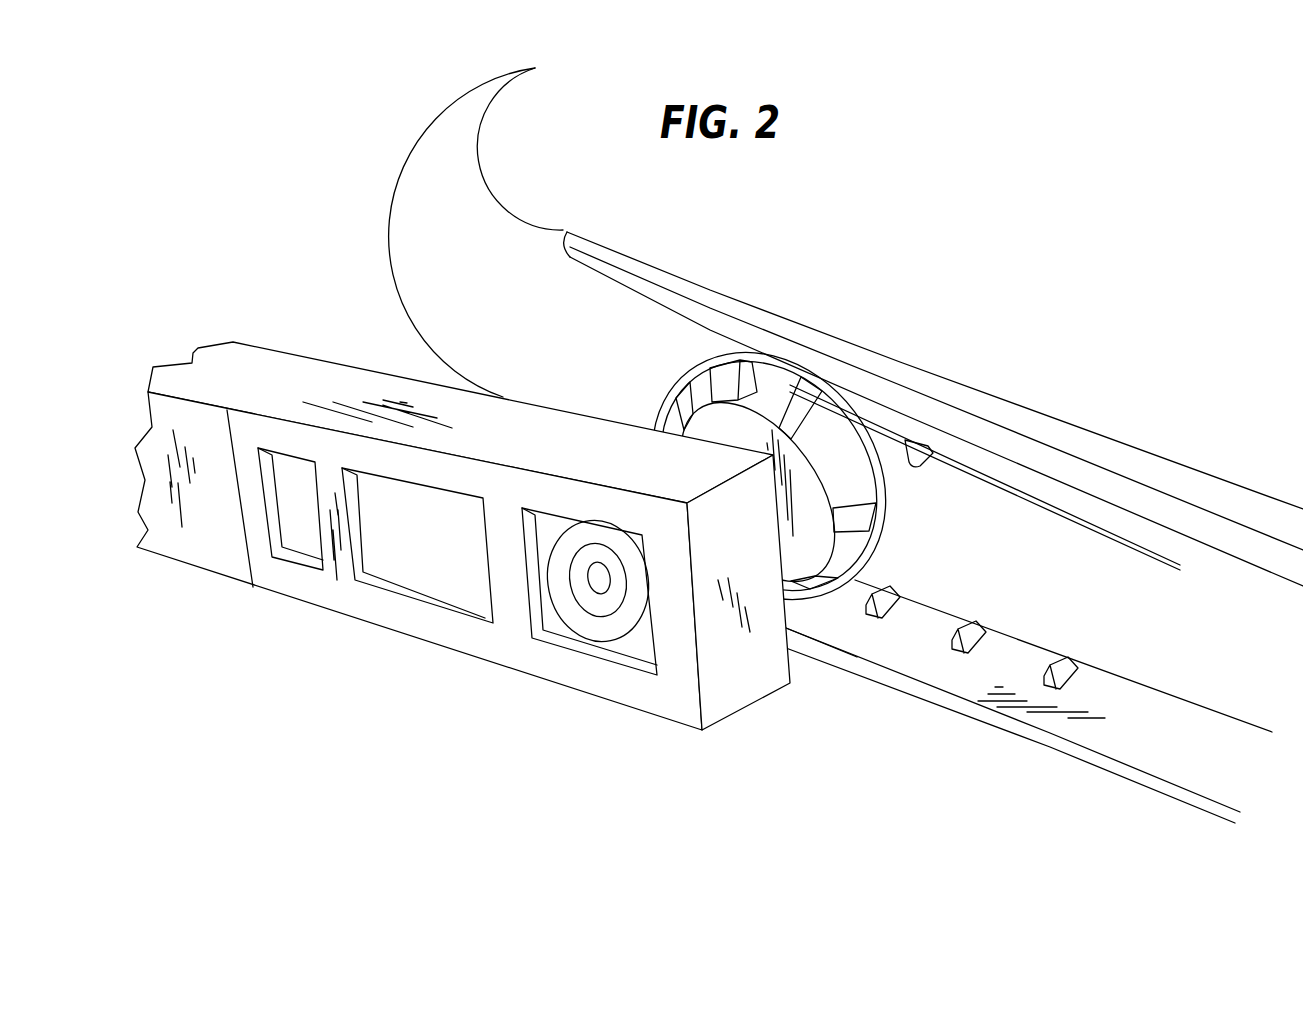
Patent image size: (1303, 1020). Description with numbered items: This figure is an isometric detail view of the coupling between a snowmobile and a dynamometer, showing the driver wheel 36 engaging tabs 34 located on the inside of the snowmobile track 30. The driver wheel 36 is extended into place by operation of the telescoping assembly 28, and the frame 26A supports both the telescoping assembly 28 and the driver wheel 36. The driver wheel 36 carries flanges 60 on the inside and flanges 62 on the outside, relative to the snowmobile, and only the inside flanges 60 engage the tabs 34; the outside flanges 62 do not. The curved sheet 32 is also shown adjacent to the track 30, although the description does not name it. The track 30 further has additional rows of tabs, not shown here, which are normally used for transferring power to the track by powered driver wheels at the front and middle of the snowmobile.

The frame 26A is at (400, 632).
The telescoping assembly 28 is at (622, 640).
The snowmobile track 30 is at (982, 455).
The sheet 32 is at (552, 134).
The tabs 34 is at (902, 602).
The driver wheel 36 is at (800, 607).
The inside flanges 60 is at (897, 425).
The outside flanges 62 is at (787, 407).